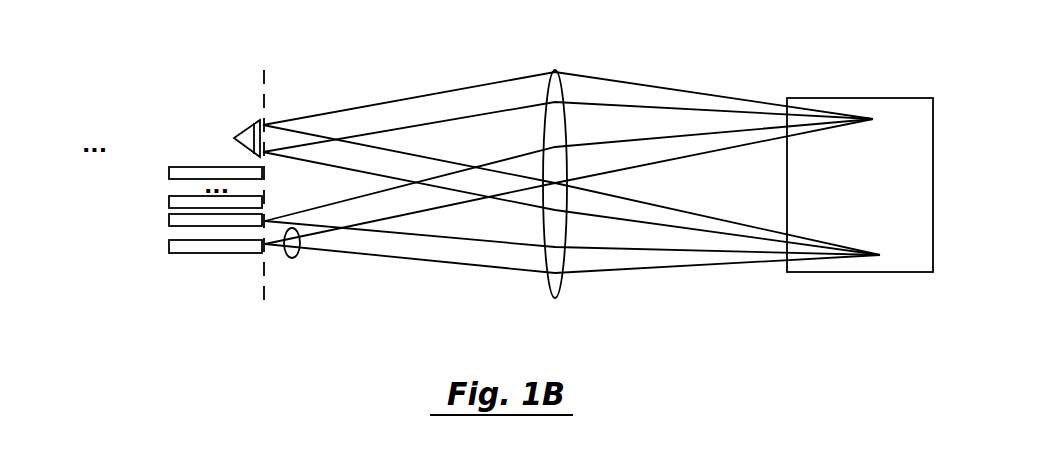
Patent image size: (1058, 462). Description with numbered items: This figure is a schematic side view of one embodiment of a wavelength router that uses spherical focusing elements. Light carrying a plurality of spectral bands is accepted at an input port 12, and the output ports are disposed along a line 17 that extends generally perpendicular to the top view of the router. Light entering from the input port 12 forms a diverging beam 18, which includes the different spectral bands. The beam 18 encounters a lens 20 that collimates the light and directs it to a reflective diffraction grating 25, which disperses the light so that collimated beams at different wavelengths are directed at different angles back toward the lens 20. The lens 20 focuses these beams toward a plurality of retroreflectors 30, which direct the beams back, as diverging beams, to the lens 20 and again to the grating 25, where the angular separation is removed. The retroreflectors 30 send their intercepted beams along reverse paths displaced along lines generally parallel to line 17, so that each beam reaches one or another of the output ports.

The input port 12 is at (266, 246).
The line 17 is at (267, 290).
The diverging beam 18 is at (293, 258).
The lens 20 is at (548, 277).
The reflective diffraction grating 25 is at (868, 98).
The retroreflector 30 is at (252, 131).